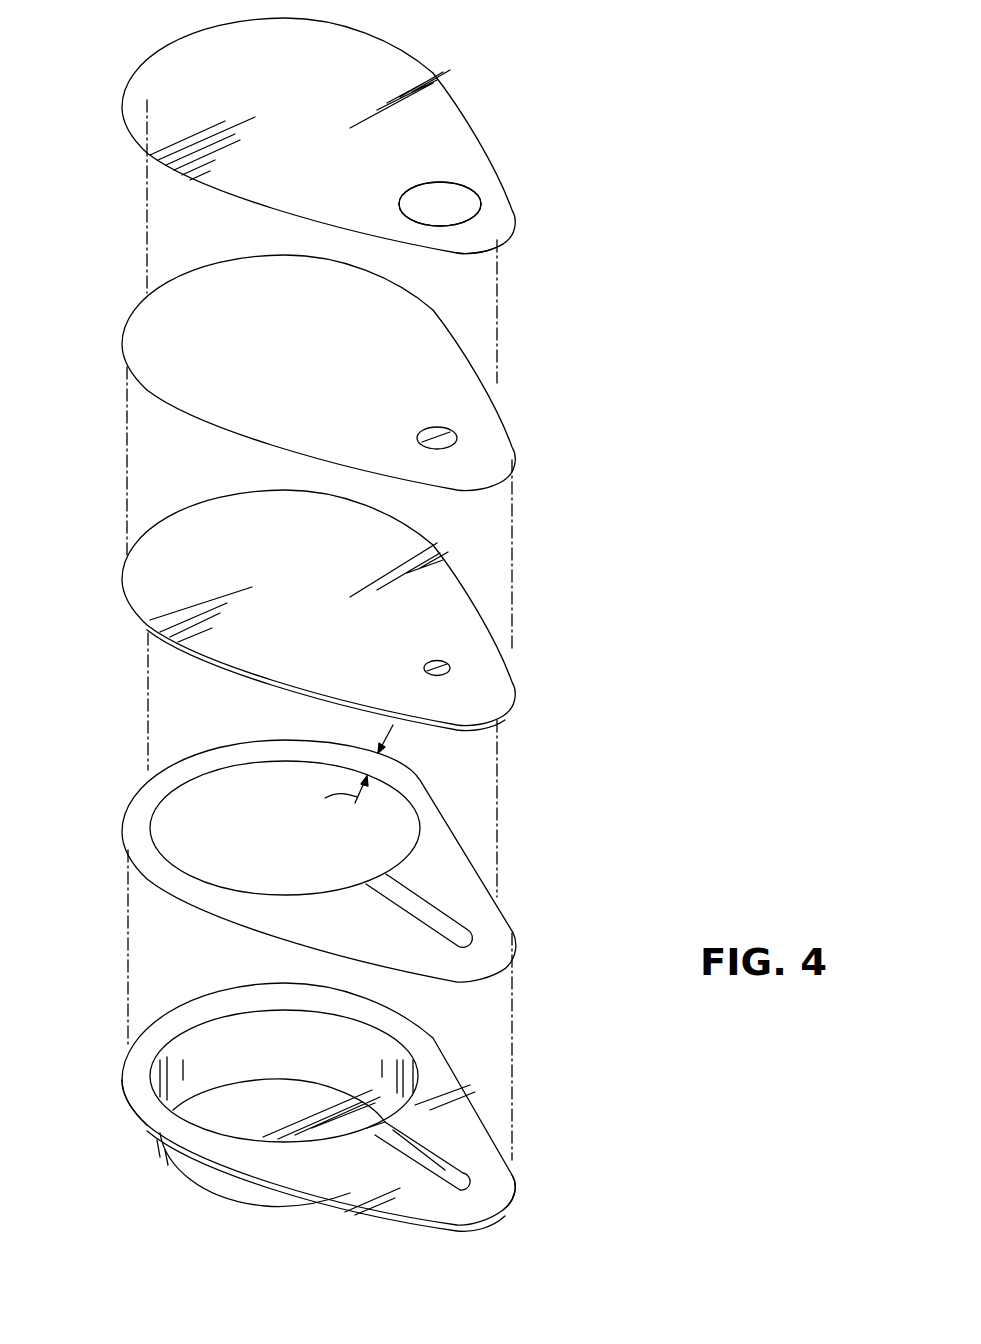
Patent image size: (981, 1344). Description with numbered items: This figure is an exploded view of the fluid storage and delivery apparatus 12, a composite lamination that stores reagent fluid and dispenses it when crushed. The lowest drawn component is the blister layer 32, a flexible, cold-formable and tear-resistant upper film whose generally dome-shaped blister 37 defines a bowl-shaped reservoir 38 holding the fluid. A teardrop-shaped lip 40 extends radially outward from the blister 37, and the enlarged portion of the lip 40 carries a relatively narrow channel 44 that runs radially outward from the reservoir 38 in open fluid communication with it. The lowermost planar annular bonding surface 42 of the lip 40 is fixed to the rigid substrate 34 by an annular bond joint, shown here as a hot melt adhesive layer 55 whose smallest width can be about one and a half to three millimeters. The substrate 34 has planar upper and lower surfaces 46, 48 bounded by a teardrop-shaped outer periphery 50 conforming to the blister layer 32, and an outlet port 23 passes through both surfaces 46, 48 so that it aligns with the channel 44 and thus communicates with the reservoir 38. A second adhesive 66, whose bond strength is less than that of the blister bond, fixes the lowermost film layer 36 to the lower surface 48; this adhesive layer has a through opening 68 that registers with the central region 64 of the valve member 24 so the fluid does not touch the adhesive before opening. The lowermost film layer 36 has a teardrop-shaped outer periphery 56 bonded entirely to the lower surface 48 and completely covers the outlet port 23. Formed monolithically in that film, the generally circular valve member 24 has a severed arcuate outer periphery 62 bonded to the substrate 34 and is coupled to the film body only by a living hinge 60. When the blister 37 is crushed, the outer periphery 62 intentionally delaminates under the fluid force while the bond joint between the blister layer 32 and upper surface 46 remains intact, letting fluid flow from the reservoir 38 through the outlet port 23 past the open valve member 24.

The fluid storage and delivery apparatus 12 is at (630, 190).
The lowermost film layer 36 is at (339, 642).
The living hinge 60 is at (402, 190).
The central region 64 is at (437, 197).
The valve member 24 is at (453, 195).
The outer periphery 56 is at (504, 194).
The outer periphery 62 is at (505, 239).
The second adhesive 66 is at (355, 373).
The through opening 68 is at (425, 438).
The substrate 34 is at (329, 591).
The upper surface 46 is at (213, 665).
The outer periphery 50 is at (123, 585).
The lower surface 48 is at (467, 633).
The outlet port 23 is at (440, 668).
The hot melt adhesive layer 55 is at (495, 935).
The blister layer 32 is at (339, 1100).
The lip 40 is at (190, 1013).
The reservoir 38 is at (370, 1063).
The channel 44 is at (437, 1163).
The bonding surface 42 is at (141, 1087).
The blister 37 is at (222, 1198).